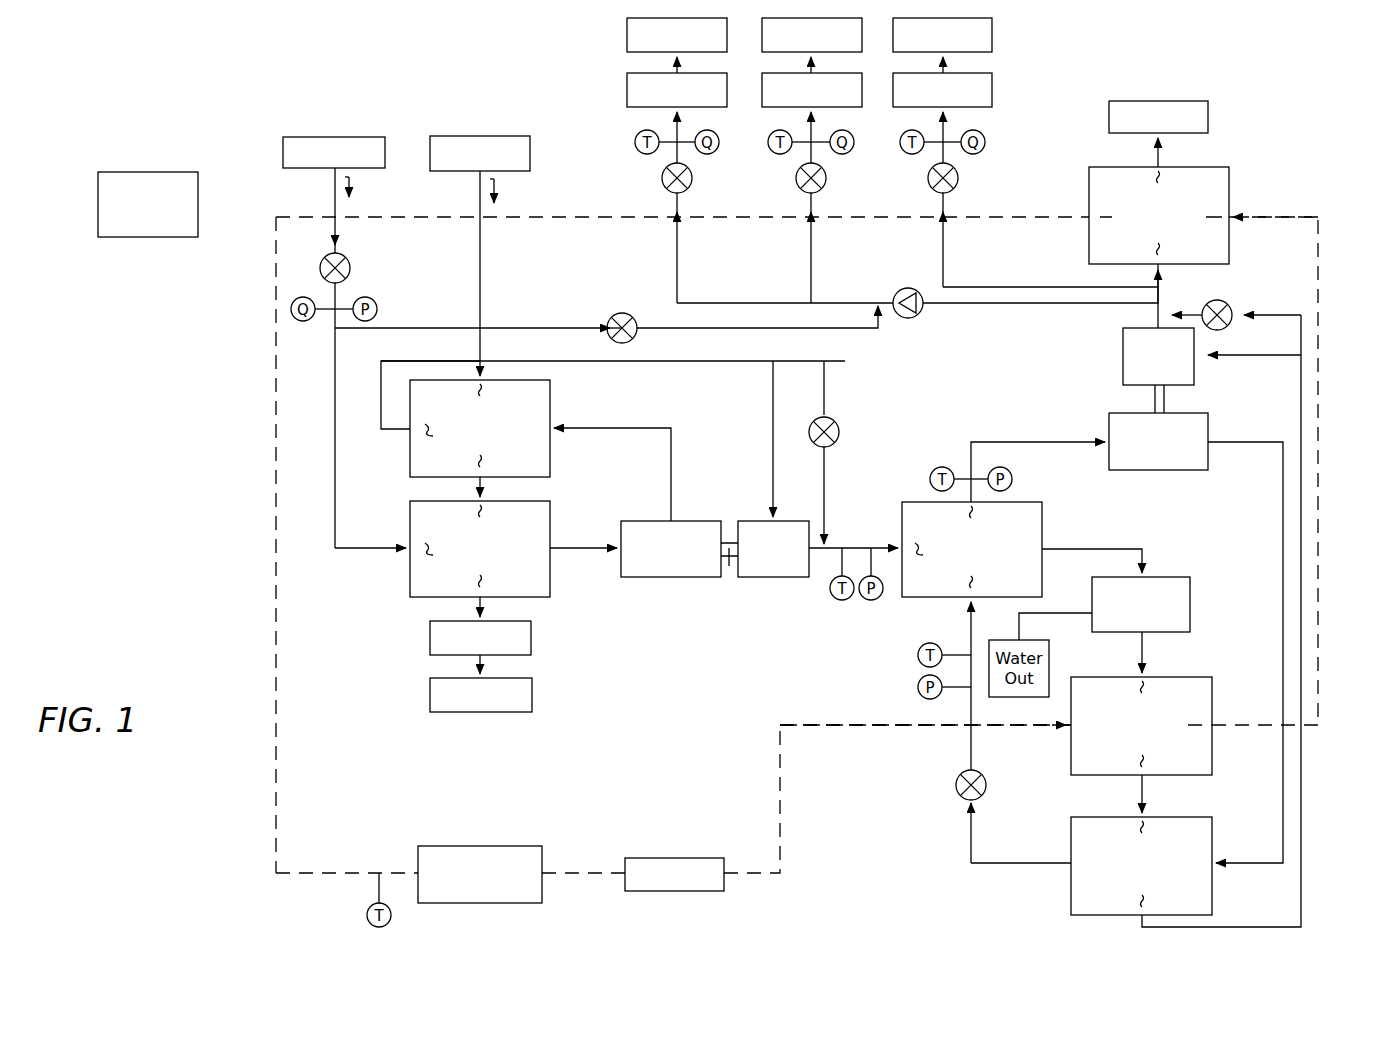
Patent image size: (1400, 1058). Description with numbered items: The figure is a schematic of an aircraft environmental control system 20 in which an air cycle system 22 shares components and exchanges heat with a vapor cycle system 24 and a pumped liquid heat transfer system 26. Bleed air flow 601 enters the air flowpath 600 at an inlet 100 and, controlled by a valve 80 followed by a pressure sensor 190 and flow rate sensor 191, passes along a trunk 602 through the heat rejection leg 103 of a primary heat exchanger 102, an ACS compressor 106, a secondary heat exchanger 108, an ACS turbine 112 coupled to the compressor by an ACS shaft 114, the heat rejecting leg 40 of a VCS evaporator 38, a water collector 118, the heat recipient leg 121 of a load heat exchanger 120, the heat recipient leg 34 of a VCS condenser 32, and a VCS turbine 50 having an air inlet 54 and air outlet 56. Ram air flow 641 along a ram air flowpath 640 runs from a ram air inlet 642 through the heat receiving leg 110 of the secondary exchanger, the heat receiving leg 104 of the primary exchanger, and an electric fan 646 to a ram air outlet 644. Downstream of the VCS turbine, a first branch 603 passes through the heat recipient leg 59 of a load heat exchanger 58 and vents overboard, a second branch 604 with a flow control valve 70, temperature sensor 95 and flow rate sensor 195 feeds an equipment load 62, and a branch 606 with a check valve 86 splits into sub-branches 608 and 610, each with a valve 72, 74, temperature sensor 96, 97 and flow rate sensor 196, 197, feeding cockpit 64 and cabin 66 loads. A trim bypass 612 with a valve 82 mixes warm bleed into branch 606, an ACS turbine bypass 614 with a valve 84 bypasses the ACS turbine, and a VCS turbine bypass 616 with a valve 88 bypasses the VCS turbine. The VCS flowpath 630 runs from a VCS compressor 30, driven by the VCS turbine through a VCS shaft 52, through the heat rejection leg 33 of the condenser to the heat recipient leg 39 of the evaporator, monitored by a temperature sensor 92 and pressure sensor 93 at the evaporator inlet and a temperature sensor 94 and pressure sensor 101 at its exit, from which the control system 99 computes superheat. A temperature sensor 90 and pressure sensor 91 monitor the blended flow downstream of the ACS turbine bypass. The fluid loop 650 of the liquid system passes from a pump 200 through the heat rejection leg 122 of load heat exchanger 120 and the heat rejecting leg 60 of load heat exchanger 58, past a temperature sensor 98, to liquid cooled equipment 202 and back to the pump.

The aircraft environmental control system 20 is at (205, 106).
The air cycle system 22 is at (643, 605).
The vapor cycle system 24 is at (985, 885).
The pumped liquid heat transfer system 26 is at (955, 790).
The VCS compressor 30 is at (1106, 428).
The VCS heat rejection heat exchanger 32 is at (1071, 897).
The heat rejection leg 33 is at (1212, 870).
The heat recipient leg 34 is at (1142, 822).
The VCS heat absorption heat exchanger 38 is at (1042, 515).
The heat recipient leg 39 is at (972, 510).
The heat rejecting leg 40 is at (915, 546).
The VCS turbine 50 is at (1123, 355).
The VCS shaft 52 is at (1153, 400).
The air inlet 54 is at (1196, 360).
The air outlet 56 is at (1156, 320).
The load heat exchanger 58 is at (1208, 167).
The heat recipient leg 59 is at (1155, 172).
The heat rejecting leg 60 is at (1222, 217).
The load 62 is at (970, 107).
The cockpit cooling and pressurization 64 is at (838, 107).
The cabin cooling and pressurization 66 is at (705, 107).
The flow control valve 70 is at (930, 182).
The valve 72 is at (798, 182).
The valve 74 is at (664, 182).
The valve 80 is at (352, 268).
The valve 82 is at (607, 316).
The valve 84 is at (840, 428).
The check valve 86 is at (920, 312).
The valve 88 is at (1232, 310).
The temperature sensor 90 is at (830, 592).
The pressure sensor 91 is at (867, 600).
The temperature sensor 92 is at (920, 650).
The pressure sensor 93 is at (918, 687).
The temperature sensor 94 is at (942, 467).
The temperature sensor 95 is at (903, 152).
The temperature sensor 96 is at (772, 152).
The temperature sensor 97 is at (635, 143).
The temperature sensor 98 is at (367, 915).
The control system 99 is at (136, 227).
The inlet 100 is at (322, 137).
The pressure sensor 101 is at (1000, 467).
The primary heat exchanger 102 is at (410, 583).
The heat rejection leg 103 is at (418, 545).
The heat receiving leg 104 is at (415, 428).
The ACS compressor 106 is at (703, 577).
The secondary heat exchanger 108 is at (550, 398).
The heat receiving leg 110 is at (487, 392).
The ACS turbine 112 is at (752, 521).
The ACS shaft 114 is at (730, 558).
The water collector 118 is at (1178, 577).
The load heat exchanger 120 is at (1200, 677).
The heat recipient leg 121 is at (1143, 690).
The heat rejection leg 122 is at (1210, 735).
The pressure sensor 190 is at (374, 300).
The flow rate sensor 191 is at (290, 310).
The flow rate sensor 195 is at (973, 154).
The flow rate sensor 196 is at (842, 154).
The flow rate sensor 197 is at (707, 154).
The pump 200 is at (674, 858).
The liquid cooled equipment 202 is at (516, 846).
The air flowpath 600 is at (298, 416).
The air flow 601 is at (355, 195).
The trunk 602 is at (330, 194).
The first branch 603 is at (1160, 283).
The second branch 604 is at (965, 287).
The branch 606 is at (876, 300).
The sub-branch 608 is at (811, 258).
The sub-branch 610 is at (677, 265).
The bypass flowpath 612 is at (452, 327).
The bypass flowpath 614 is at (840, 361).
The bypass flowpath 616 is at (1320, 332).
The VCS flowpath 630 is at (955, 748).
The ram air flowpath 640 is at (489, 282).
The ram air flow 641 is at (500, 190).
The ram air inlet 642 is at (477, 136).
The ram air outlet 644 is at (430, 694).
The electric fan 646 is at (430, 638).
The fluid loop 650 is at (272, 874).